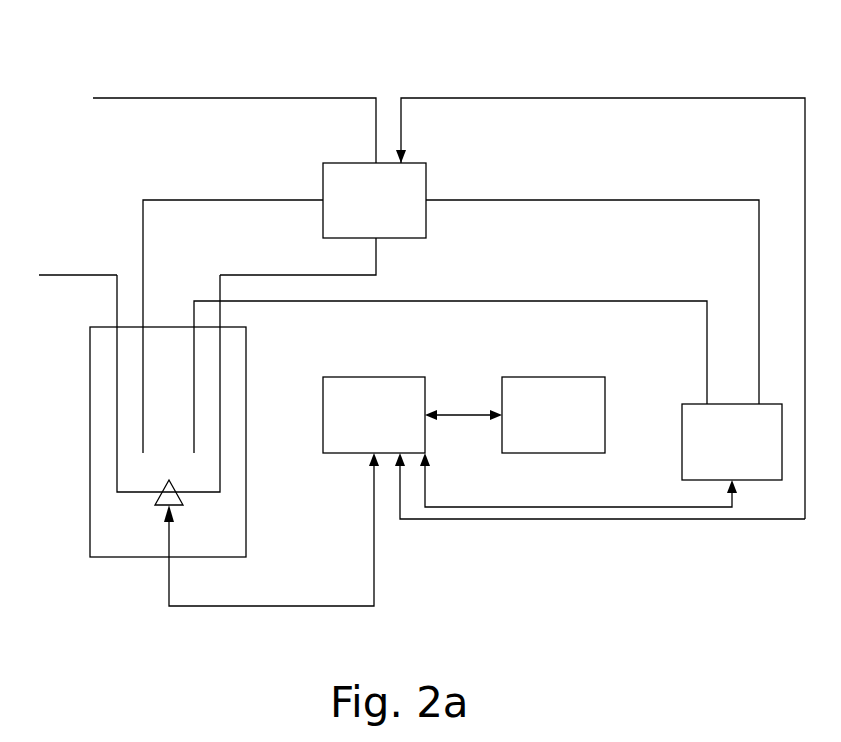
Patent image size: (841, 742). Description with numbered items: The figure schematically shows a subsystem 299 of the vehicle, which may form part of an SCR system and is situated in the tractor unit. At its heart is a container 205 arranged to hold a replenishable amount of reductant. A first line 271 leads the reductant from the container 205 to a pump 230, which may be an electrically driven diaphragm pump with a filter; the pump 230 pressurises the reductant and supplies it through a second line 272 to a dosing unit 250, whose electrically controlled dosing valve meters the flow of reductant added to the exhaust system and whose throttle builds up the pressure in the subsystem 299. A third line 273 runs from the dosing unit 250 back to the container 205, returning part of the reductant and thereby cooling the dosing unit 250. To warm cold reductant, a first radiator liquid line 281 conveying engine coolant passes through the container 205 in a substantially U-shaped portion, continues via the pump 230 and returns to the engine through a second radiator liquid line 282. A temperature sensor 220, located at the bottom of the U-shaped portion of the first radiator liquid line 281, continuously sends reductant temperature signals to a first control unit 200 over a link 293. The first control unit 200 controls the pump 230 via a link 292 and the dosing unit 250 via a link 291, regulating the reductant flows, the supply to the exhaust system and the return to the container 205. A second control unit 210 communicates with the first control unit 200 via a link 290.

The first control unit 200 is at (374, 415).
The container 205 is at (115, 557).
The second control unit 210 is at (553, 415).
The temperature sensor 220 is at (183, 498).
The pump 230 is at (323, 219).
The dosing unit 250 is at (732, 442).
The first line 271 is at (195, 200).
The second line 272 is at (545, 200).
The third line 273 is at (688, 301).
The first radiator liquid line 281 is at (95, 275).
The second radiator liquid line 282 is at (198, 98).
The link 290 is at (459, 414).
The link 291 is at (610, 506).
The link 292 is at (630, 520).
The link 293 is at (375, 582).
The subsystem 299 is at (471, 68).